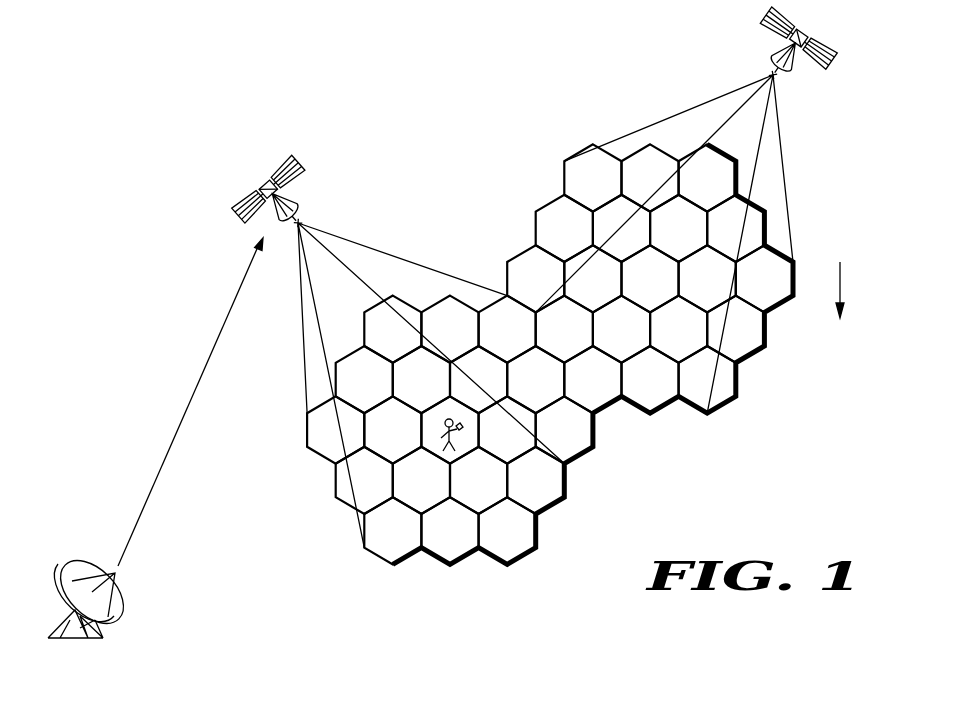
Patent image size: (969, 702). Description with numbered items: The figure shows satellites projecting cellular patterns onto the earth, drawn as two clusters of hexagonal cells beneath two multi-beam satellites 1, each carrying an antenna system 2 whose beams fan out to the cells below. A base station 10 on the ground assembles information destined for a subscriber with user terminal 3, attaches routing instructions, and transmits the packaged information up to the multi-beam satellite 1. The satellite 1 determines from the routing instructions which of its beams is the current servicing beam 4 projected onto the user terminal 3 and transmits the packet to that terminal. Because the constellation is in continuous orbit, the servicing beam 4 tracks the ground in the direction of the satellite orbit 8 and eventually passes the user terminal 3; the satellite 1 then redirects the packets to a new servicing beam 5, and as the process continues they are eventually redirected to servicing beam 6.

The multi-beam satellite 1 is at (256, 176).
The antenna system 2 is at (345, 239).
The user terminal 3 is at (462, 443).
The servicing beam 4 is at (430, 443).
The new servicing beam 5 is at (492, 383).
The servicing beam 6 is at (447, 312).
The direction of the satellite orbit 8 is at (842, 283).
The base station 10 is at (128, 613).